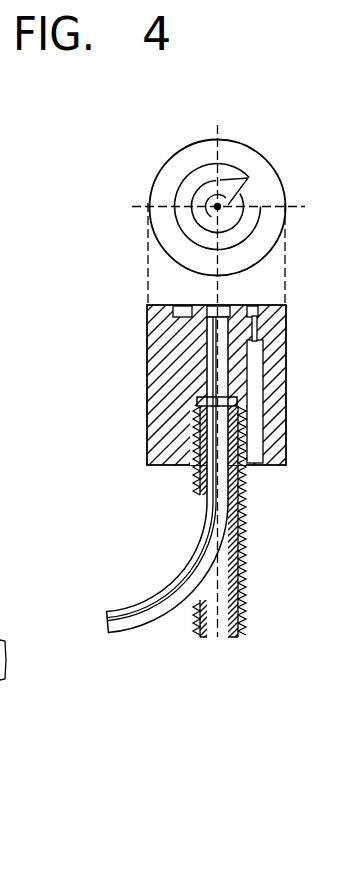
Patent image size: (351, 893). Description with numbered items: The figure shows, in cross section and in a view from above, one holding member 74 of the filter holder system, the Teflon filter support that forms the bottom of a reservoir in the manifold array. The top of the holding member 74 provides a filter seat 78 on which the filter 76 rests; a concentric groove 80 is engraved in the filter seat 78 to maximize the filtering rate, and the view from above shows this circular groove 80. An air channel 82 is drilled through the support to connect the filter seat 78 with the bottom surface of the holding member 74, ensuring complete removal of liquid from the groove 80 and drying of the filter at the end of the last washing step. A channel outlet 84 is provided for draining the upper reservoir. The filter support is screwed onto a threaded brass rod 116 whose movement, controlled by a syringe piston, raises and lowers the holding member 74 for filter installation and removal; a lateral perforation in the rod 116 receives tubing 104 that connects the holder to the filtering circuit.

The holding member 74 is at (147, 358).
The filter 76 is at (147, 307).
The filter seat 78 is at (137, 183).
The concentric groove 80 is at (182, 305).
The air channel 82 is at (256, 464).
The channel outlet 84 is at (208, 380).
The tubing 104 is at (125, 610).
The brass rod 116 is at (247, 562).